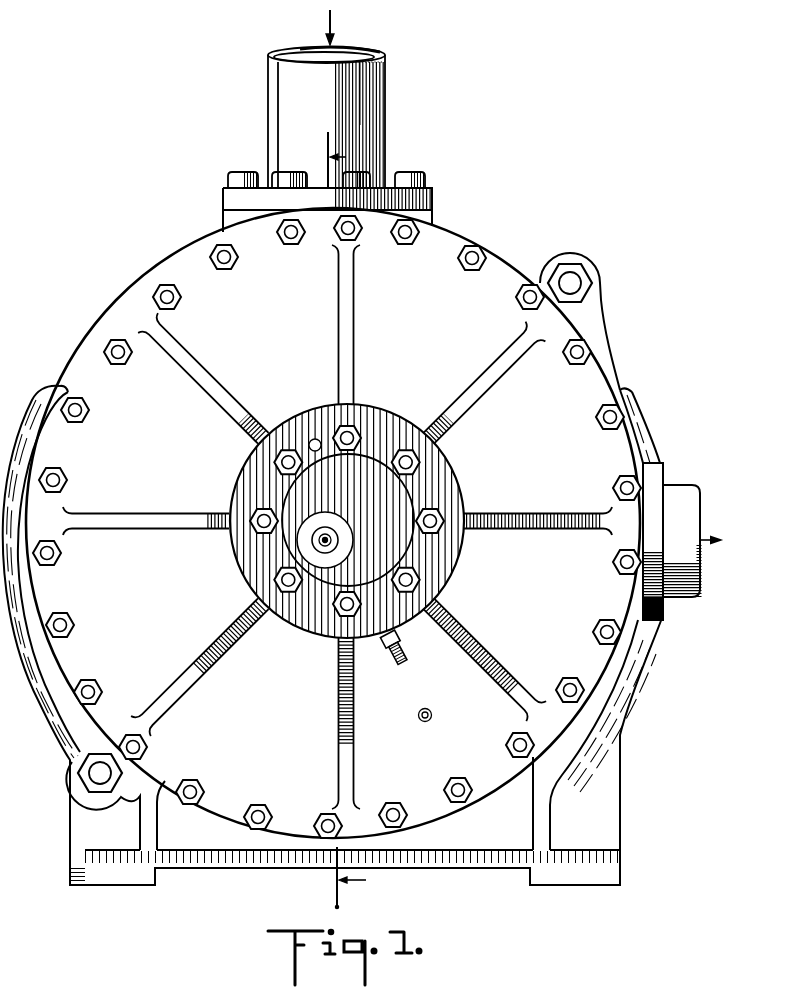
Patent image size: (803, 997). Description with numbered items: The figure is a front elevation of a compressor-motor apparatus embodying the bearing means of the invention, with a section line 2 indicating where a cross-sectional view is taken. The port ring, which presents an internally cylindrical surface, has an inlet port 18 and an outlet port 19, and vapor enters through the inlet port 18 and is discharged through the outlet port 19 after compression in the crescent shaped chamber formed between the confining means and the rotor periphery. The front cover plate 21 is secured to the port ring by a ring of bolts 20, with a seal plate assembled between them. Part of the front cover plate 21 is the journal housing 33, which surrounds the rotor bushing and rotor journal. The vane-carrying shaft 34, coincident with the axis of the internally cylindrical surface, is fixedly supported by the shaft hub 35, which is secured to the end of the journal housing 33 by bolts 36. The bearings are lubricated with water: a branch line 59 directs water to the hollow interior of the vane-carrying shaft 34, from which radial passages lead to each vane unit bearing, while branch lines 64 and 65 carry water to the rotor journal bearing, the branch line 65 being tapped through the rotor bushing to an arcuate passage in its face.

The section line 2- 2 is at (347, 520).
The inlet port 18 is at (363, 75).
The outlet port 19 is at (688, 597).
The bolts 20 is at (162, 288).
The front cover plate 21 is at (450, 245).
The journal housing 33 is at (302, 418).
The vane-carrying shaft 34 is at (352, 534).
The shaft hub 35 is at (388, 488).
The bolts 36 is at (408, 577).
The branch line 59 is at (321, 530).
The branch line 64 is at (433, 714).
The branch line 65 is at (412, 652).